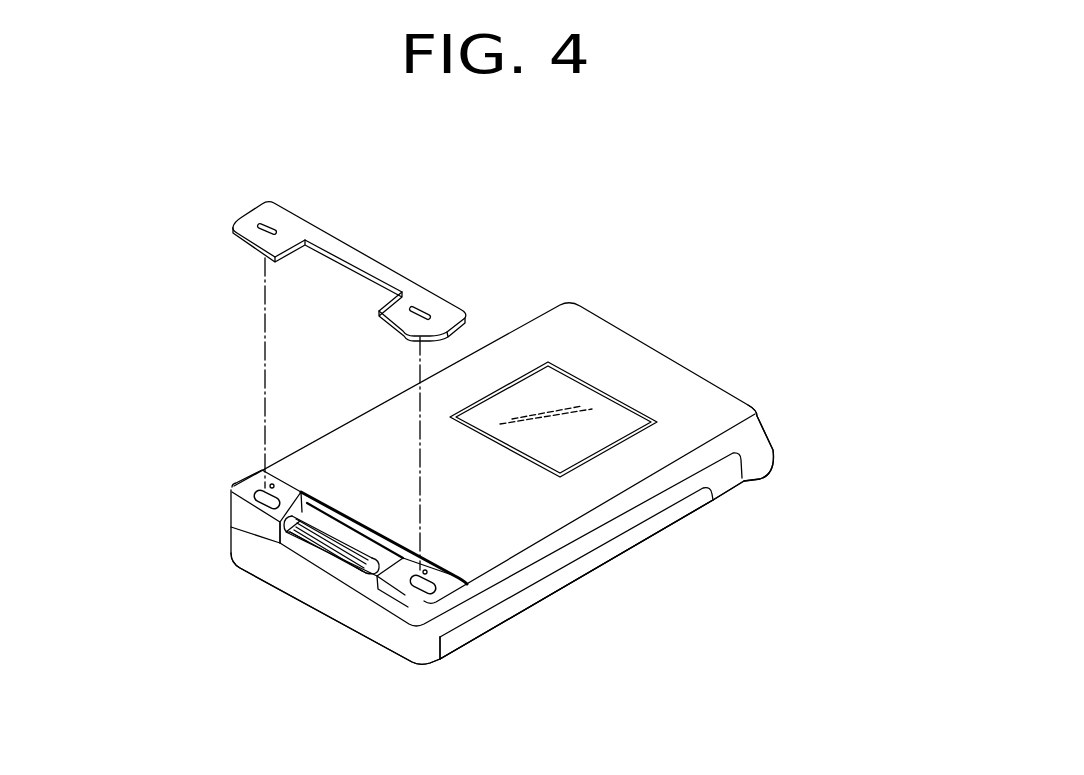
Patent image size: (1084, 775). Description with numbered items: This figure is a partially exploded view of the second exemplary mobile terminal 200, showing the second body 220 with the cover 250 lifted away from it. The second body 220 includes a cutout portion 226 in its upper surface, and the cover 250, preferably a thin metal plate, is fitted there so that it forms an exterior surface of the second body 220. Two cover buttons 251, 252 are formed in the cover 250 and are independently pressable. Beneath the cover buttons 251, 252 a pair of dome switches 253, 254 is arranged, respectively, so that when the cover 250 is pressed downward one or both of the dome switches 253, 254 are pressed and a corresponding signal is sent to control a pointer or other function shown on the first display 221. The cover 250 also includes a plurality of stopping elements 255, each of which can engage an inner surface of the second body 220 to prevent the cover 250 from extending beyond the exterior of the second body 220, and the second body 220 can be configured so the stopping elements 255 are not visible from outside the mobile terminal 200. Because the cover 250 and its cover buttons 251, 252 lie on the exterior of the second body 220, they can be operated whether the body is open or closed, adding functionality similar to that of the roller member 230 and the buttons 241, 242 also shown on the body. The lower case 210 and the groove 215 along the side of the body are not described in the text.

The mobile terminal 200 is at (616, 271).
The lower case 210 is at (733, 500).
The groove 215 is at (598, 560).
The second body 220 is at (703, 413).
The first display 221 is at (533, 398).
The cutout portion 226 is at (284, 474).
The roller member 230 is at (332, 548).
The button 241 is at (283, 533).
The button 242 is at (368, 568).
The cover 250 is at (352, 255).
The cover button 251 is at (267, 220).
The cover button 252 is at (425, 307).
The dome switch 253 is at (258, 500).
The dome switch 254 is at (417, 589).
The stopping element 255 is at (380, 322).